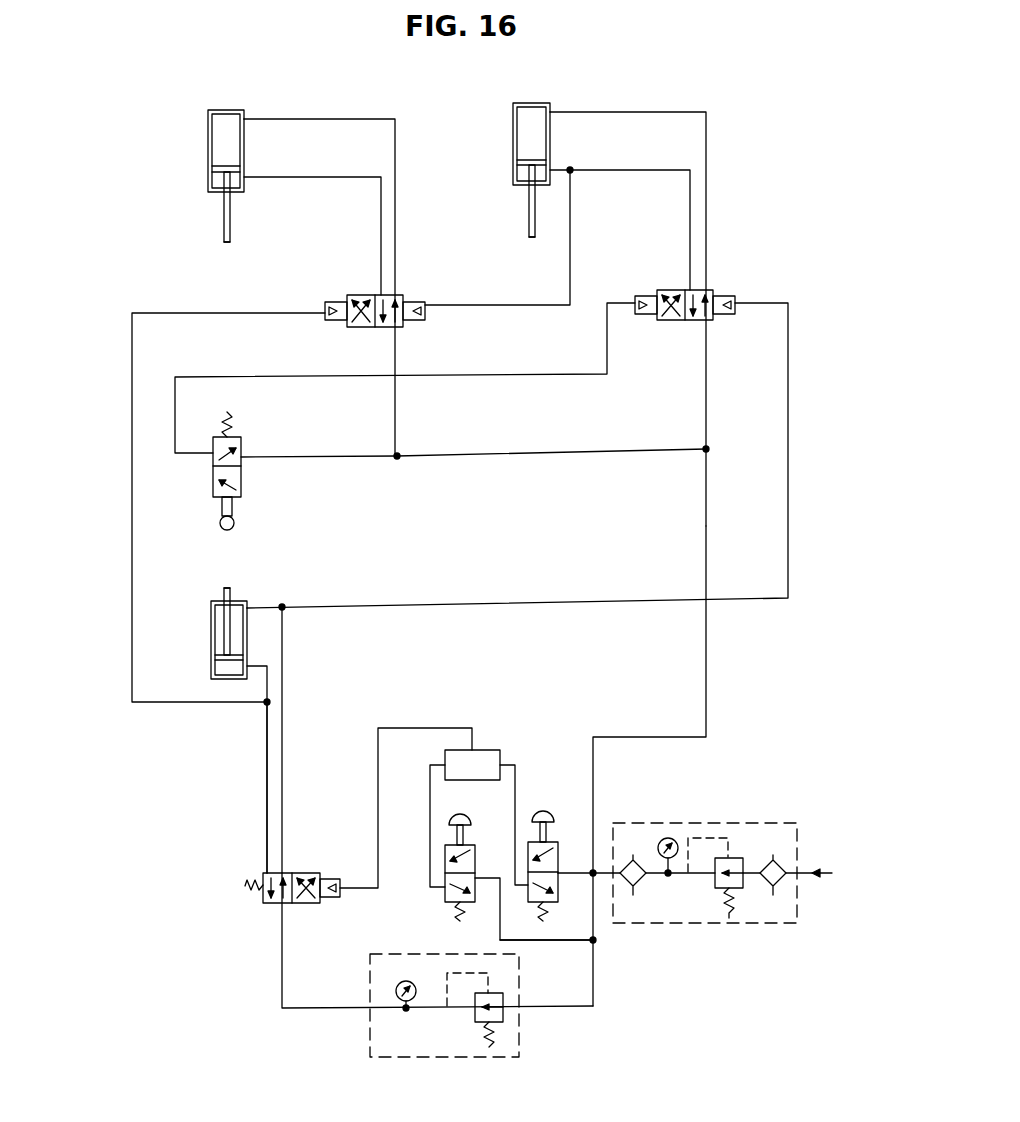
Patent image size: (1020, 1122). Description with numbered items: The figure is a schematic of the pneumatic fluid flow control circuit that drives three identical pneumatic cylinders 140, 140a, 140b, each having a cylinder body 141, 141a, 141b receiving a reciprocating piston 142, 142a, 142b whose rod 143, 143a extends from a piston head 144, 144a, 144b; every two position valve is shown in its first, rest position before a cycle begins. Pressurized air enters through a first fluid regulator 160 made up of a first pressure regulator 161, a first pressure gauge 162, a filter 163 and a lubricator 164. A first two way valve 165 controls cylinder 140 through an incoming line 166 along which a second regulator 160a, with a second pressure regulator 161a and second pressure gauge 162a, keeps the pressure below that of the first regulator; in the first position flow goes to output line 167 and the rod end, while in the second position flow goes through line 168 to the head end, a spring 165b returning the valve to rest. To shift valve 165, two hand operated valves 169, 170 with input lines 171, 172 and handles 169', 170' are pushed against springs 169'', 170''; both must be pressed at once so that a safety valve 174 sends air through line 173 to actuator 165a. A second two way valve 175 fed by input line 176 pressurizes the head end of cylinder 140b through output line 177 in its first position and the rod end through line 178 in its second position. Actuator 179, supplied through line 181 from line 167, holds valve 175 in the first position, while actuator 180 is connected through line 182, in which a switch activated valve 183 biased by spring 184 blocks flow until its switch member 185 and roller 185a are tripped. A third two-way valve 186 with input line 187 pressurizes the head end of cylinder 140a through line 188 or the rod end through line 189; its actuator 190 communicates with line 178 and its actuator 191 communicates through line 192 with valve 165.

The pneumatic cylinder 140 is at (209, 640).
The pneumatic cylinder 140a is at (206, 160).
The pneumatic cylinder 140b is at (511, 149).
The cylinder body 141 is at (211, 615).
The cylinder body 141a is at (208, 127).
The cylinder body 141b is at (513, 121).
The piston 142 is at (232, 608).
The piston 142a is at (222, 214).
The piston 142b is at (527, 208).
The rod 143 is at (527, 228).
The rod 143a is at (222, 234).
The piston head 144 is at (215, 662).
The piston head 144a is at (212, 172).
The piston head 144b is at (517, 165).
The first fluid regulator 160 is at (776, 820).
The second regulator 160a is at (372, 1060).
The first pressure regulator 161 is at (740, 858).
The second pressure regulator 161a is at (505, 1020).
The first pressure gauge 162 is at (672, 838).
The second pressure gauge 162a is at (396, 992).
The filter 163 is at (777, 862).
The lubricator 164 is at (634, 858).
The first two way valve 165 is at (262, 907).
The actuator 165a is at (332, 878).
The spring 165b is at (252, 882).
The incoming line 166 is at (282, 989).
The output line 167 is at (284, 763).
The line 168 is at (267, 788).
The hand operated valve 169 is at (520, 882).
The handle 169' is at (473, 813).
The spring 169'' is at (431, 919).
The hand operated valve 170 is at (574, 860).
The handle 170' is at (558, 810).
The spring 170'' is at (525, 916).
The input line 171 is at (540, 943).
The input line 172 is at (568, 885).
The line 173 is at (378, 783).
The safety valve 174 is at (488, 750).
The second two way valve 175 is at (670, 326).
The input line 176 is at (706, 527).
The output line 177 is at (686, 108).
The line 178 is at (640, 170).
The actuator 179 is at (729, 296).
The actuator 180 is at (642, 296).
The line 181 is at (788, 487).
The line 182 is at (440, 376).
The switch activated valve 183 is at (243, 451).
The spring 184 is at (230, 422).
The switch member 185 is at (233, 507).
The roller 185a is at (221, 527).
The third two-way valve 186 is at (361, 332).
The input line 187 is at (397, 428).
The line 188 is at (350, 115).
The line 189 is at (323, 177).
The actuator 190 is at (425, 302).
The actuator 191 is at (338, 301).
The line 192 is at (184, 318).